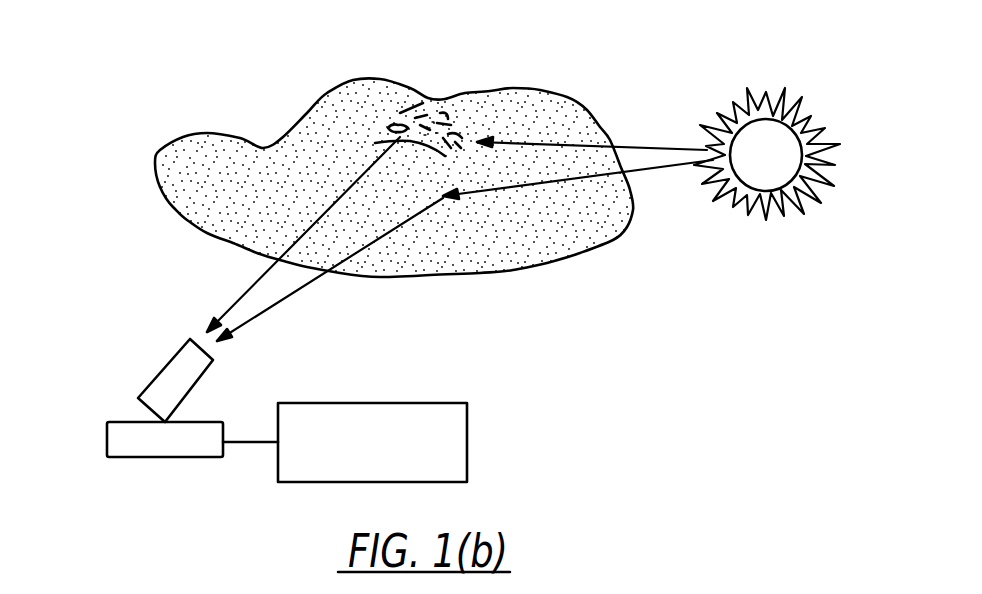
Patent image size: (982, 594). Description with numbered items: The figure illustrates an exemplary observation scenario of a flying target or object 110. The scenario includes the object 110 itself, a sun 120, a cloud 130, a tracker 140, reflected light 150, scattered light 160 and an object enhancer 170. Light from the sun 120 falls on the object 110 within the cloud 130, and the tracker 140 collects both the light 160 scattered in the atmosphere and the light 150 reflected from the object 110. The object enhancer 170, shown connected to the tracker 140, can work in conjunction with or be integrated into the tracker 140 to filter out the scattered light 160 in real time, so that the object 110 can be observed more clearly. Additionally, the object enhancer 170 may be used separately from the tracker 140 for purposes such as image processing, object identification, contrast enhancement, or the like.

The object 110 is at (423, 106).
The sun 120 is at (778, 128).
The cloud 130 is at (160, 152).
The tracker 140 is at (133, 457).
The reflected light 150 is at (243, 296).
The scattered light 160 is at (258, 316).
The object enhancer 170 is at (462, 403).